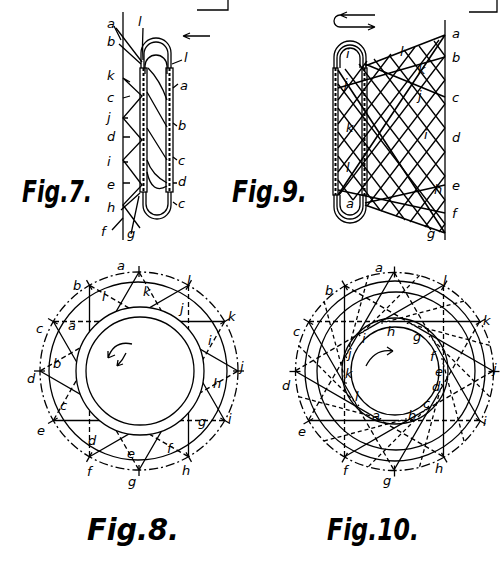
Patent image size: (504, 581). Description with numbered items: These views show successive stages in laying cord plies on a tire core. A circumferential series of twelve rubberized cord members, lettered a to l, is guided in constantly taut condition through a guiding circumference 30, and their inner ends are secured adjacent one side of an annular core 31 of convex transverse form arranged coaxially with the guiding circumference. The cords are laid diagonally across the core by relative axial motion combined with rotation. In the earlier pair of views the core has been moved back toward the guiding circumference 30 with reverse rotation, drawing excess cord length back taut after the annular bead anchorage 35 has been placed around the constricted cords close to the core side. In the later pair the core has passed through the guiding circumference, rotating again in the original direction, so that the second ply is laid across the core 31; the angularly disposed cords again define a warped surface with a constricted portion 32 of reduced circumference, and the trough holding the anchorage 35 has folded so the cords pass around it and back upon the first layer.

In FIG. 7, the guiding circumference 30 is at (123, 100).
In FIG. 9, the guiding circumference 30 is at (445, 152).
In FIG. 8, the guiding circumference 30 is at (198, 284).
In FIG. 10, the guiding circumference 30 is at (455, 300).
In FIG. 7, the annular core 31 is at (168, 94).
In FIG. 9, the annular core 31 is at (340, 145).
In FIG. 8, the annular core 31 is at (205, 362).
In FIG. 10, the annular core 31 is at (356, 416).
In FIG. 9, the constricted portion of reduced circumference 32 is at (395, 72).
In FIG. 7, the annular bead anchorage 35 is at (156, 40).